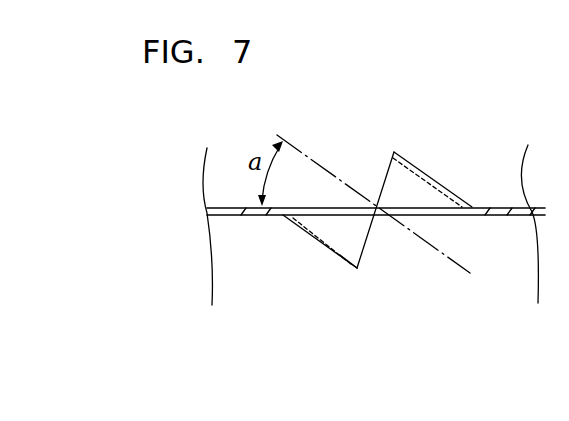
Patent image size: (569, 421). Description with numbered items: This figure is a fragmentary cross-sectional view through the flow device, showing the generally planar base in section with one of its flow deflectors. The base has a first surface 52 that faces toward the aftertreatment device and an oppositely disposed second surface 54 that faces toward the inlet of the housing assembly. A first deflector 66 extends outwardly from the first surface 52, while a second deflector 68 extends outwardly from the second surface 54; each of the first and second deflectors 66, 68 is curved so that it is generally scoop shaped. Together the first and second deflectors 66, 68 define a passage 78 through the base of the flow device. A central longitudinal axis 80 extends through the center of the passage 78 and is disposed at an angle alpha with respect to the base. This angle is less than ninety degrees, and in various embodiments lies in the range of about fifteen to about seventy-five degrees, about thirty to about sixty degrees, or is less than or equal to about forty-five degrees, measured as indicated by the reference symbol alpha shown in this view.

The first surface 52 is at (517, 207).
The second surface 54 is at (498, 216).
The first deflector 66 is at (420, 152).
The second deflector 68 is at (295, 235).
The passage 78 is at (342, 253).
The central longitudinal axis 80 is at (322, 170).